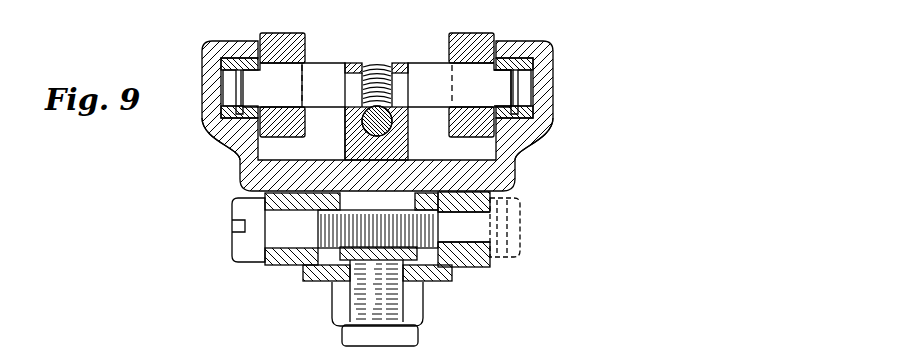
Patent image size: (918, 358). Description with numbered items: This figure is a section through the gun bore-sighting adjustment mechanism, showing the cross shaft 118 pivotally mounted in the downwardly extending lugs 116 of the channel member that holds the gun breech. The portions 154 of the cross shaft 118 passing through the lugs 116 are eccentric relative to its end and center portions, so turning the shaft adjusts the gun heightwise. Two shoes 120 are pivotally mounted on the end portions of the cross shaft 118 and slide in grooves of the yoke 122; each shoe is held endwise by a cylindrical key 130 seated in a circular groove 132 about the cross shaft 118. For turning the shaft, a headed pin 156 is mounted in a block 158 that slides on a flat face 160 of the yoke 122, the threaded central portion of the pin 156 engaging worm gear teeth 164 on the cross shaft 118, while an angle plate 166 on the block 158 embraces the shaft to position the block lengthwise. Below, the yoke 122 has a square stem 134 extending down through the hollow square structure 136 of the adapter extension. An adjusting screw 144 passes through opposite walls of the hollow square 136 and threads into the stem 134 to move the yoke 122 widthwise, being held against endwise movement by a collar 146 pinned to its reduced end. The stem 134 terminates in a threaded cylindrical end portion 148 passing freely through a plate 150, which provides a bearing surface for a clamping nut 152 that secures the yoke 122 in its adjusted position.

The lugs 116 is at (300, 35).
The cross shaft 118 is at (533, 77).
The shoes 120 is at (224, 110).
The yoke 122 is at (517, 160).
The cylindrical key 130 is at (231, 141).
The circular groove 132 is at (226, 88).
The square stem 134 is at (420, 256).
The hollow square structure 136 is at (497, 258).
The adjusting screw 144 is at (361, 229).
The collar 146 is at (519, 202).
The threaded cylindrical end portion 148 is at (400, 341).
The plate 150 is at (313, 282).
The clamping nut 152 is at (346, 312).
The eccentric portions of the cross shaft 154 is at (331, 68).
The headed pin 156 is at (393, 127).
The block 158 is at (345, 135).
The flat face 160 is at (347, 147).
The worm gear teeth 164 is at (393, 88).
The angle plate 166 is at (400, 63).